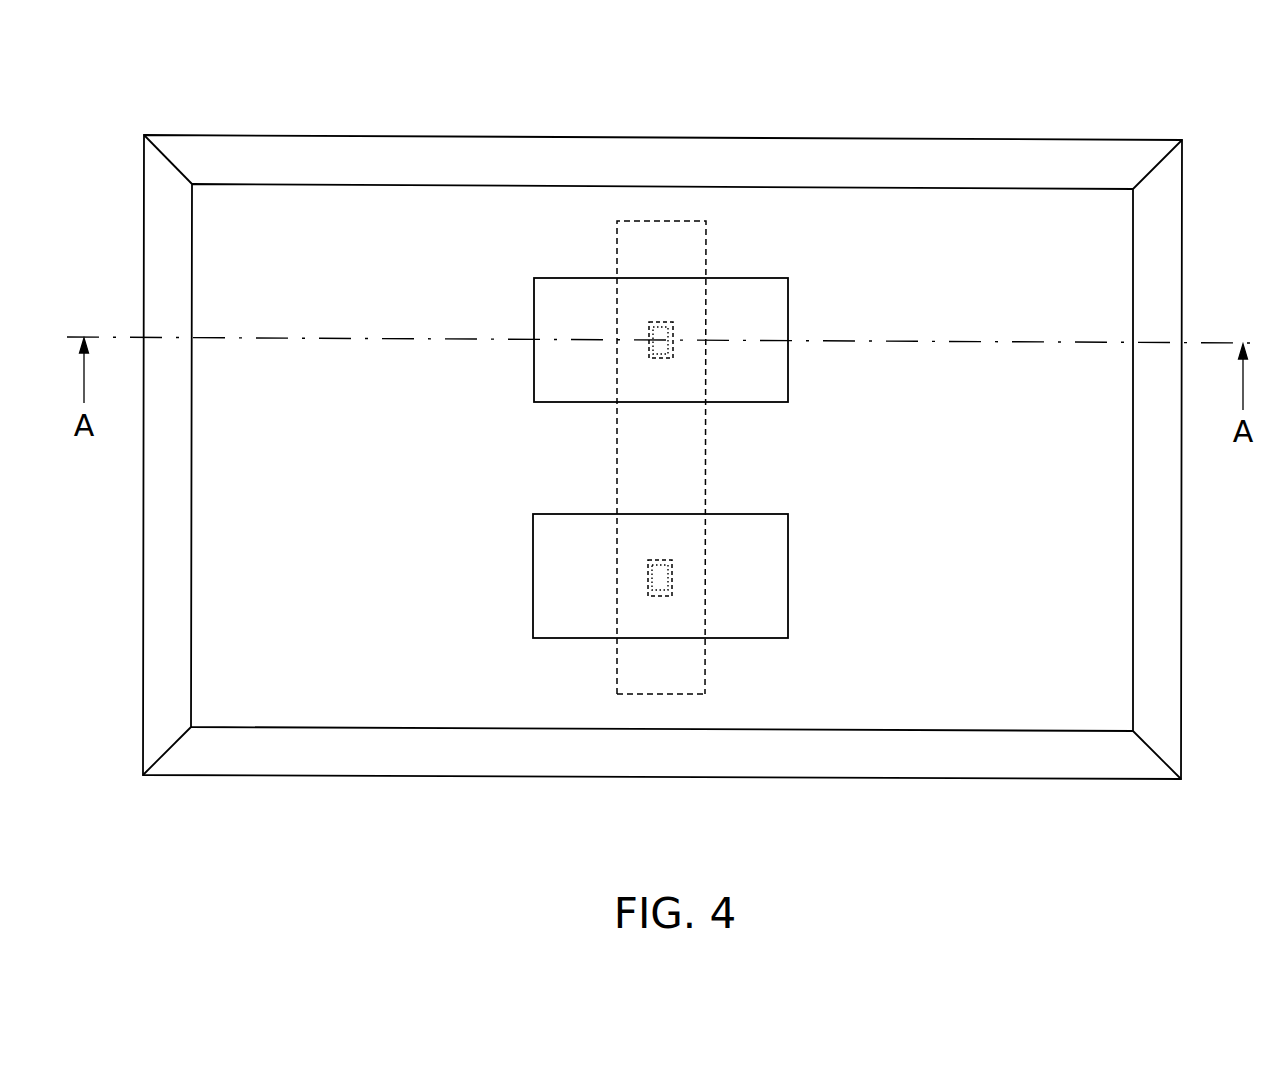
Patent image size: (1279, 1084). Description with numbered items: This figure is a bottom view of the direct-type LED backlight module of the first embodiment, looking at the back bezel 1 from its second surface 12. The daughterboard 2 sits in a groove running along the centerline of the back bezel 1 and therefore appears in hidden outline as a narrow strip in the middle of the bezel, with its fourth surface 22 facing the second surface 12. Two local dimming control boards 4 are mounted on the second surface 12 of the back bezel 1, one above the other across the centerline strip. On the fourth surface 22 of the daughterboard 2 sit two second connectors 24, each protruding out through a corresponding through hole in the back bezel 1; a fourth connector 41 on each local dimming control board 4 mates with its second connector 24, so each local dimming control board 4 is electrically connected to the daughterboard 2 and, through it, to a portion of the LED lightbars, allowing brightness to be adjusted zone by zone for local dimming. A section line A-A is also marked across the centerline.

The back bezel 1 is at (1182, 215).
The second surface 12 is at (923, 224).
The daughterboard 2 is at (615, 678).
The fourth surface 22 is at (646, 680).
The local dimming control board 4 is at (788, 306).
The second connector 24 is at (663, 322).
The fourth connector 41 is at (672, 340).